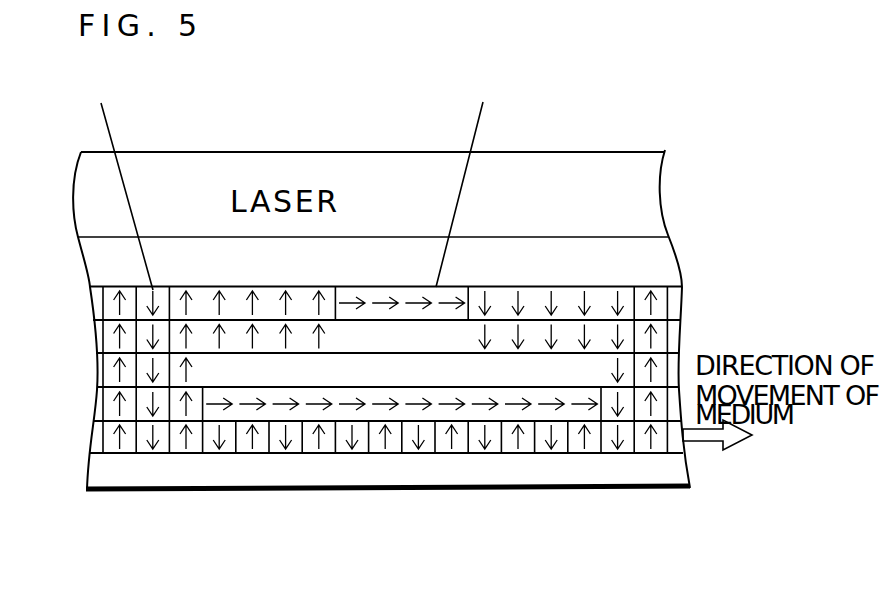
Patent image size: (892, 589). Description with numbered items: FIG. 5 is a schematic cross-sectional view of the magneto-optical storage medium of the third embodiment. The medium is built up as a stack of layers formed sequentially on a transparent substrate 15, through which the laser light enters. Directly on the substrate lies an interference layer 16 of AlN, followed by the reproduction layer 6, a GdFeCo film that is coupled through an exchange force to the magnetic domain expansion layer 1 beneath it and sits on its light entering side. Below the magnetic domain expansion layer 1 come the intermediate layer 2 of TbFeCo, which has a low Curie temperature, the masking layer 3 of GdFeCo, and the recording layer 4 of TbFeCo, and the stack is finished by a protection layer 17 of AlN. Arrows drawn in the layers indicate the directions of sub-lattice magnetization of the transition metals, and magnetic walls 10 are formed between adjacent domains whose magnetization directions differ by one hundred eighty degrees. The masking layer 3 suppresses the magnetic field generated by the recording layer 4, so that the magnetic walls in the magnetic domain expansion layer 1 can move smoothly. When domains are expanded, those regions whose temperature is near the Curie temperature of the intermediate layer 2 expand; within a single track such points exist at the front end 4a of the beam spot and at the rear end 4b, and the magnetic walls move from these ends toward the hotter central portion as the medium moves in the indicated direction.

The transparent substrate 15 is at (657, 190).
The interference layer 16 is at (668, 263).
The reproduction layer 6 is at (97, 300).
The magnetic domain expansion layer 1 is at (97, 333).
The intermediate layer 2 is at (97, 367).
The masking layer 3 is at (97, 402).
The recording layer 4 is at (95, 437).
The magnetic walls 10 is at (136, 456).
The front end of the beam spot 4a is at (179, 456).
The rear end of the beam spot 4b is at (626, 454).
The protection layer 17 is at (677, 469).